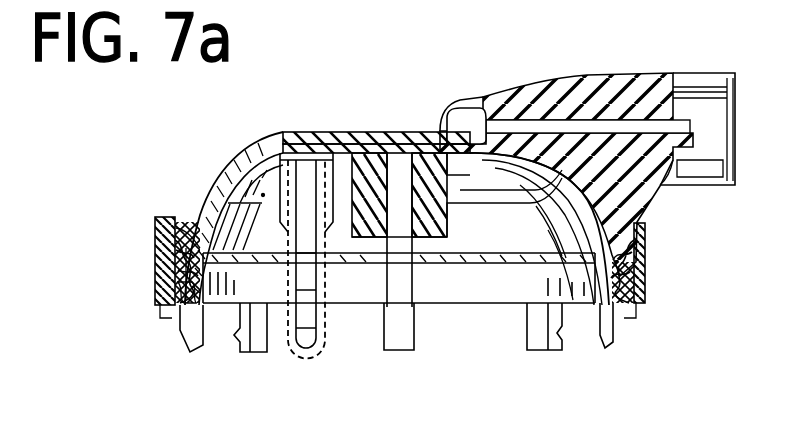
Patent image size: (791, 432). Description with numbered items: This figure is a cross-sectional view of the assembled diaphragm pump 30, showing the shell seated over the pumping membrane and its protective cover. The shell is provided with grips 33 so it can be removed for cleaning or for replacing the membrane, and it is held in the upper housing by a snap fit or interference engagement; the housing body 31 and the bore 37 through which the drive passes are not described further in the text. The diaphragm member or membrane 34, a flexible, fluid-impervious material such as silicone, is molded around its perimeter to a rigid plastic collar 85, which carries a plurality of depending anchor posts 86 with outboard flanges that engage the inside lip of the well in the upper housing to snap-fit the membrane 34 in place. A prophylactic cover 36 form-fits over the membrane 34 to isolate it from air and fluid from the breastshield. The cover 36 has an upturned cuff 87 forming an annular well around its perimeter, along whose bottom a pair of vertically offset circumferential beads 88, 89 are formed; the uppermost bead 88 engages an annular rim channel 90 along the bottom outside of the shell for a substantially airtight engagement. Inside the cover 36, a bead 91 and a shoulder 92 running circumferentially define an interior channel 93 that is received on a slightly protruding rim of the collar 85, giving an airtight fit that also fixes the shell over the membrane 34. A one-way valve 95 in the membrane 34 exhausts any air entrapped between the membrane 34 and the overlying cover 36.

The diaphragm pump 30 is at (121, 328).
The housing body 31 is at (570, 84).
The grips 33 is at (630, 72).
The diaphragm member or membrane 34 is at (247, 143).
The prophylactic cover 36 is at (352, 132).
The shaft bore 37 is at (377, 250).
The collar 85 is at (622, 311).
The anchor posts 86 is at (597, 348).
The upturned cuff 87 is at (153, 285).
The uppermost circumferential bead 88 is at (152, 256).
The circumferential bead 89 is at (170, 305).
The annular rim channel 90 is at (172, 228).
The bead 91 is at (182, 306).
The shoulder 92 is at (180, 262).
The interior channel 93 is at (155, 276).
The one-way valve 95 is at (284, 345).